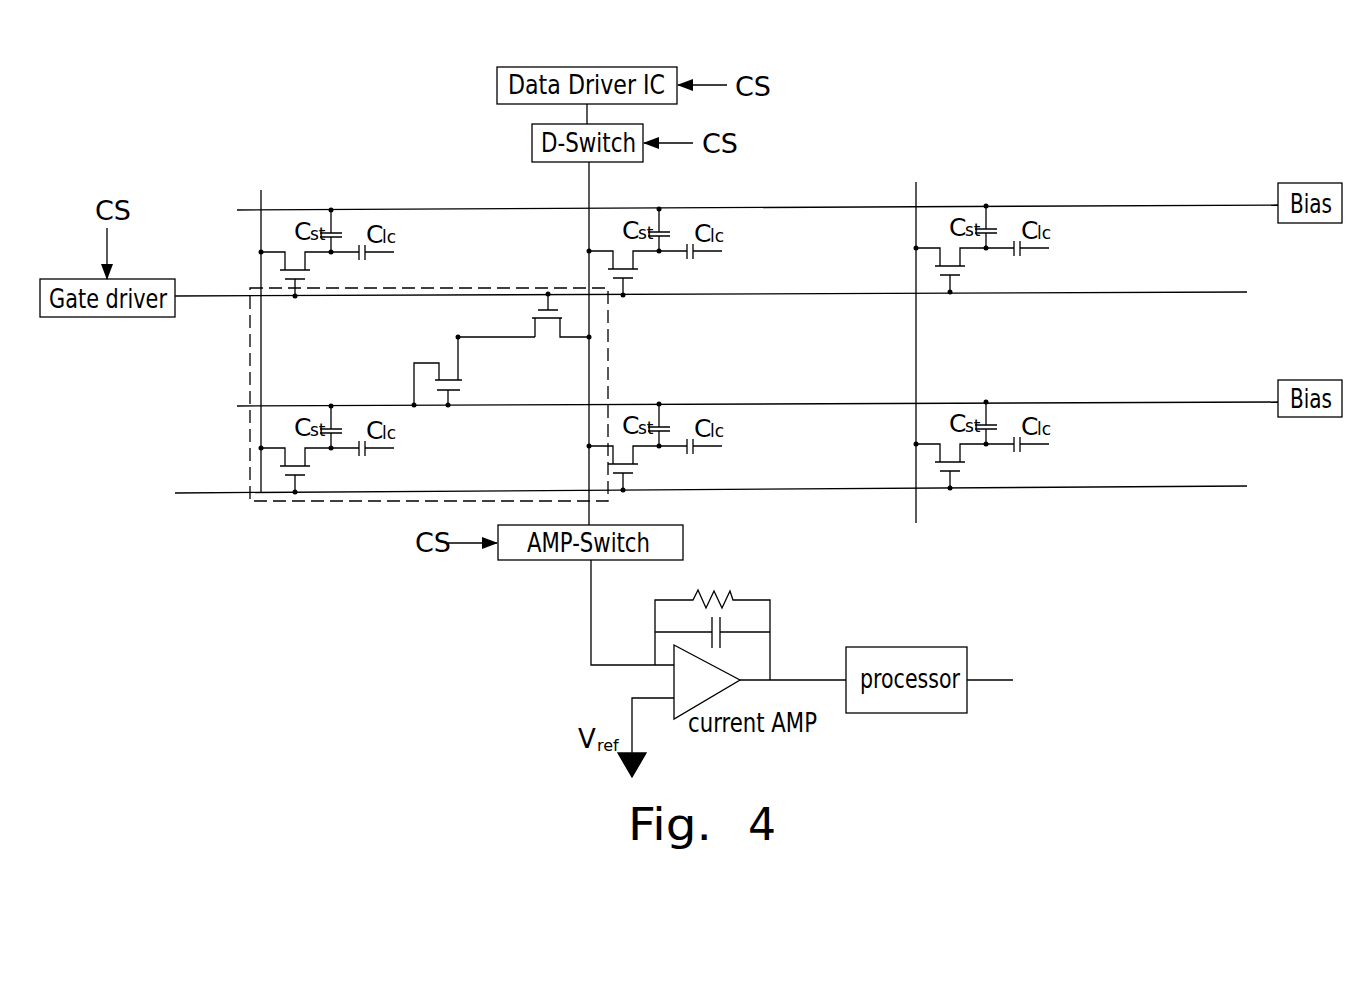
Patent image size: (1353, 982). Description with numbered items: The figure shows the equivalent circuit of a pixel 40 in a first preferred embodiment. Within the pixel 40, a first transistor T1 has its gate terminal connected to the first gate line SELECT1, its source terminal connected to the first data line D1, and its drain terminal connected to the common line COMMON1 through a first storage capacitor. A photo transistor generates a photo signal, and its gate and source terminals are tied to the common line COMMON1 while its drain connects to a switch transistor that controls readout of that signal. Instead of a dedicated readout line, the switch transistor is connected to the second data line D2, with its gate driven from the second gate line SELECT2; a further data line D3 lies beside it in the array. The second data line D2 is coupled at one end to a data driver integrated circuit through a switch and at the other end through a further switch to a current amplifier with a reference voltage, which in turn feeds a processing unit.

The pixel 40 is at (388, 394).
The first data line D1 is at (269, 322).
The second data line D2 is at (570, 343).
The third data line D3 is at (926, 334).
The first transistor T1 is at (328, 449).
The first gate line SELECT1 is at (711, 506).
The second gate line SELECT2 is at (711, 307).
The common line COMMON1 is at (757, 387).